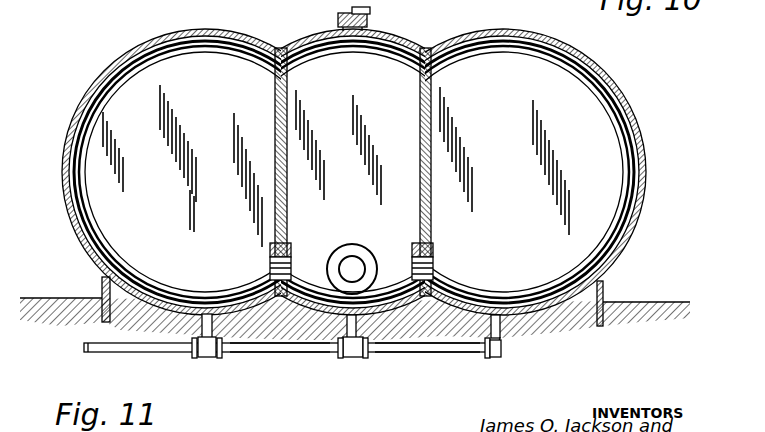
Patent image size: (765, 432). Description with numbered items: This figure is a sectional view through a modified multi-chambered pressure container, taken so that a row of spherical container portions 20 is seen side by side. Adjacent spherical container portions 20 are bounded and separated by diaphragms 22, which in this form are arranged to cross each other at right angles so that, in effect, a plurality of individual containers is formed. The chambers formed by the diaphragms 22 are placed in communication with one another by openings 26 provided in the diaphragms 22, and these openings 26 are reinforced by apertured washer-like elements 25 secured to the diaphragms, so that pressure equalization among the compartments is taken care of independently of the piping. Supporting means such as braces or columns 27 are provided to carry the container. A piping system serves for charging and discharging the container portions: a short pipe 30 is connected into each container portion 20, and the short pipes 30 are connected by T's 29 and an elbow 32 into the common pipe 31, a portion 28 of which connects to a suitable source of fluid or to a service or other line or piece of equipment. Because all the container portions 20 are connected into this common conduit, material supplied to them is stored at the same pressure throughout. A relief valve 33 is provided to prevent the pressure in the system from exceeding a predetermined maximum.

The spherical container portion 20 is at (72, 229).
The diaphragm 22 is at (420, 122).
The apertured washer-like element 25 is at (291, 250).
The opening 26 is at (291, 266).
The brace or column 27 is at (100, 289).
The portion of common pipe 28 is at (140, 352).
The T 29 is at (200, 355).
The short pipe 30 is at (215, 328).
The common pipe 31 is at (258, 355).
The elbow 32 is at (490, 356).
The relief valve 33 is at (371, 12).